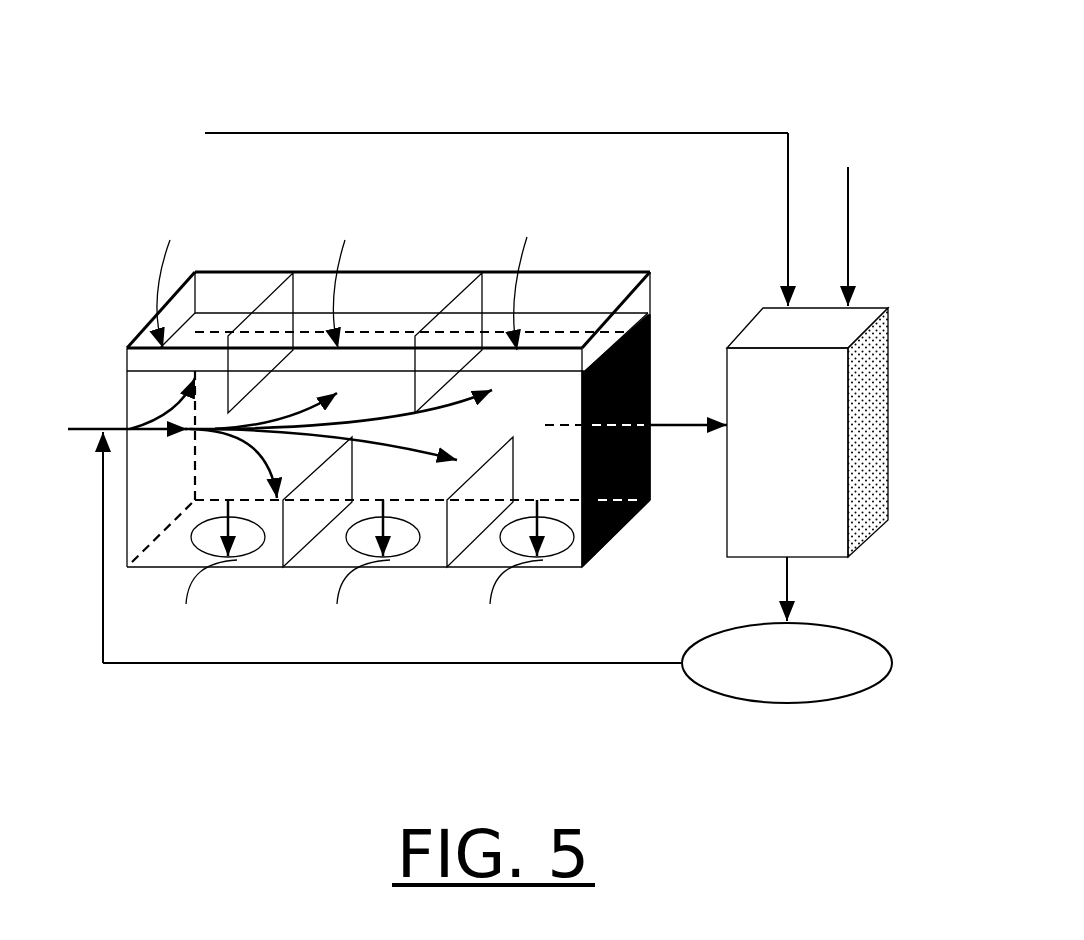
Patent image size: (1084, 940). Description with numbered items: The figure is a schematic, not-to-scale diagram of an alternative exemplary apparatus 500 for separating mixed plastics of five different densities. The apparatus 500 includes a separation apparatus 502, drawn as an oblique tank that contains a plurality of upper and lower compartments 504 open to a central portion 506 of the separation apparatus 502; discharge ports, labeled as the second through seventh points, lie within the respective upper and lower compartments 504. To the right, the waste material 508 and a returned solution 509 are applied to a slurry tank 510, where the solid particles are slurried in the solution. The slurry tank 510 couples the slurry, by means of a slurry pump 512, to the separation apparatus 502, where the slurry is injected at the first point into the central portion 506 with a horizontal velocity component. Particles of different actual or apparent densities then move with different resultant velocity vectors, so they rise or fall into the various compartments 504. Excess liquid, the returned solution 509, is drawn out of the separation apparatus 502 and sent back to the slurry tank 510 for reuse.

The separation apparatus 500 is at (465, 42).
The separation apparatus 502 is at (657, 353).
The upper and lower compartments 504 is at (225, 325).
The central portion 506 is at (505, 412).
The waste material 508 is at (430, 195).
The returned solution 509 is at (878, 203).
The slurry tank 510 is at (807, 464).
The slurry pump 512 is at (497, 567).